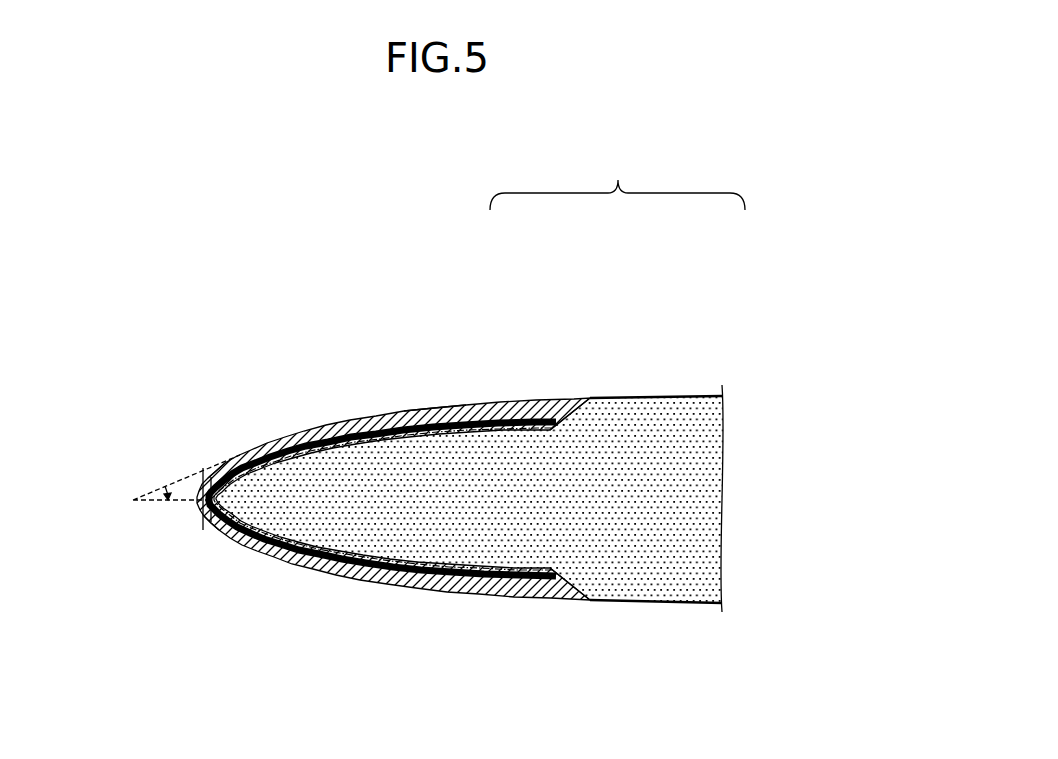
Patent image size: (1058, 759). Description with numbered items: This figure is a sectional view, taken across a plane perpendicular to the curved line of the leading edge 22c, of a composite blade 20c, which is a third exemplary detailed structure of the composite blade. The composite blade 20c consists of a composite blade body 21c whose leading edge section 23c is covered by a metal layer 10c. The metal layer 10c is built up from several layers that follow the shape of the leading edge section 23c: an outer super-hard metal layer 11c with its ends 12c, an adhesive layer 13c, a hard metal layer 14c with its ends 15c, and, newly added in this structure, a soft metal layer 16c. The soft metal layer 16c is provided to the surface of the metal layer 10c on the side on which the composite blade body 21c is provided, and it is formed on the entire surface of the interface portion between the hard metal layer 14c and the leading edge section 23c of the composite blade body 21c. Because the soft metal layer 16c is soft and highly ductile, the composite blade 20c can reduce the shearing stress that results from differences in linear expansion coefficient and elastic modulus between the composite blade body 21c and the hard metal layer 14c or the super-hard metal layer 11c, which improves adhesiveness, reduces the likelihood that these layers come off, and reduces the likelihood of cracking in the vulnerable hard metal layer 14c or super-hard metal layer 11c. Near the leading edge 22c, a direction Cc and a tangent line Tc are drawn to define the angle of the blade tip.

The composite blade 20c is at (617, 178).
The metal layer 10c is at (497, 284).
The composite blade body 21c is at (677, 284).
The super-hard metal layer 11c is at (218, 453).
The ends 12c is at (232, 450).
The adhesive layer 13c is at (328, 430).
The soft metal layer 16c is at (380, 432).
The hard metal layer 14c is at (462, 410).
The ends 15c is at (582, 400).
The leading edge section 23c is at (550, 497).
The leading edge 22c is at (199, 522).
The tangent line Tc is at (203, 470).
The direction Cc is at (200, 500).